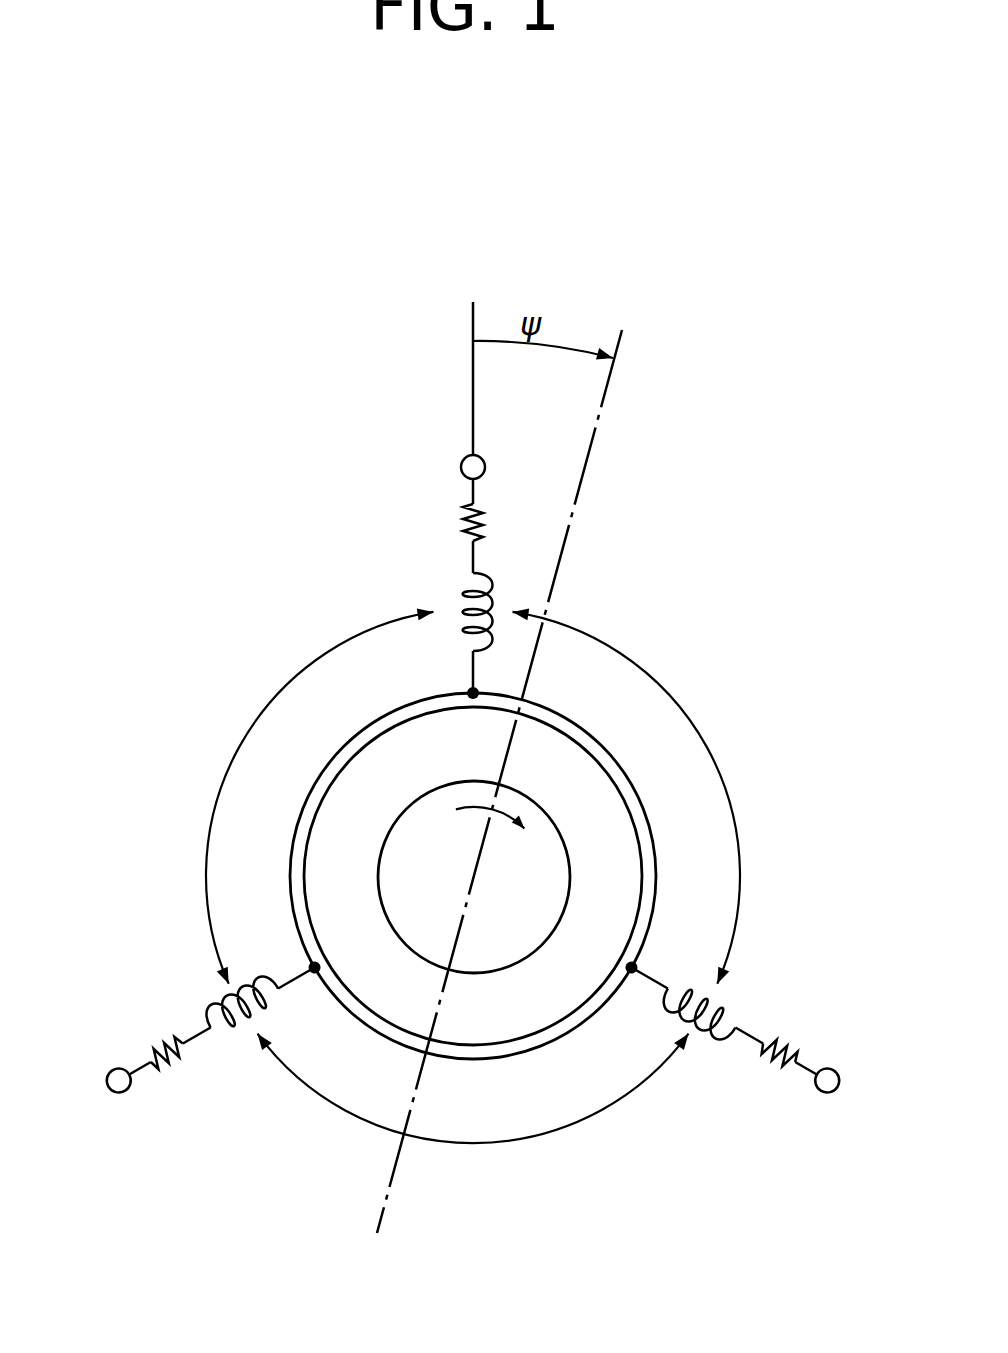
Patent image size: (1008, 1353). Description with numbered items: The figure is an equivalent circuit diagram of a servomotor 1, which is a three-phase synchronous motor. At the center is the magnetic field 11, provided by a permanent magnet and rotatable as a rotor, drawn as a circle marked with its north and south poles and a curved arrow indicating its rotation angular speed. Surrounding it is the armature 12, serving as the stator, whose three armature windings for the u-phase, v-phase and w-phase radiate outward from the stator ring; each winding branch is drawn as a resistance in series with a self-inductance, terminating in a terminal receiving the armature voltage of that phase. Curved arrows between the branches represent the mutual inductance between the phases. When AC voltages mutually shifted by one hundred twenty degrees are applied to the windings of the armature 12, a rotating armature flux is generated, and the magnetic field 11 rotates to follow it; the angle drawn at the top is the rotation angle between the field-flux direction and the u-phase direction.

The servomotor 1 is at (755, 613).
The magnetic field 11 is at (480, 973).
The armature 12 is at (530, 1050).